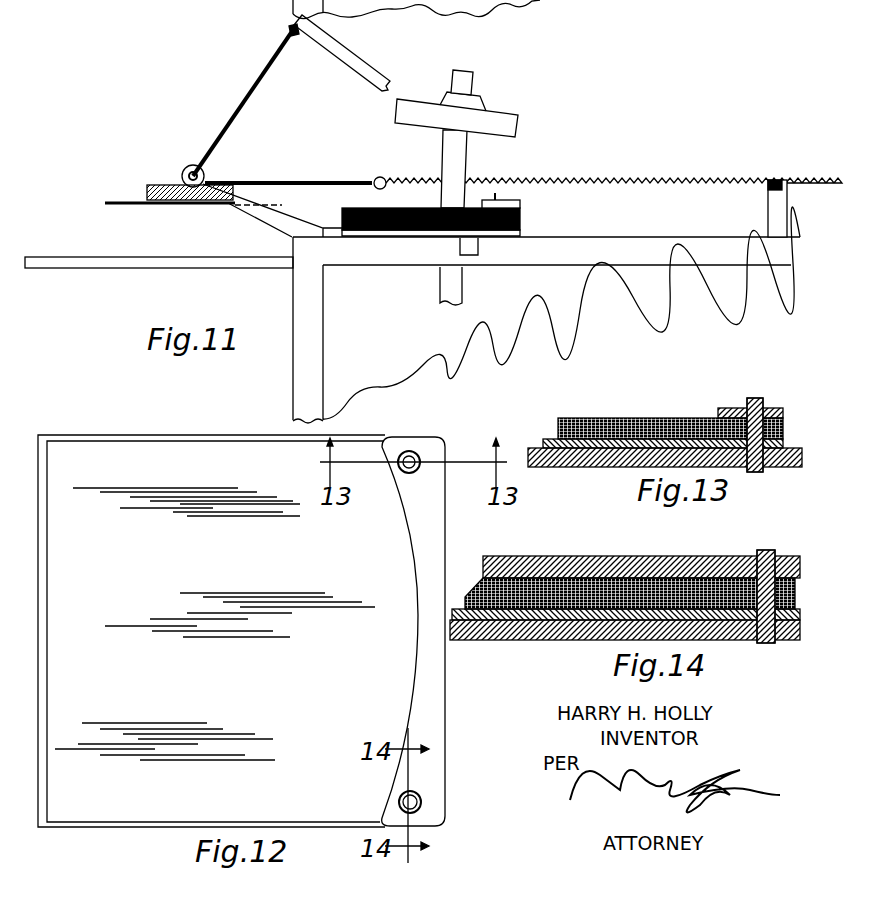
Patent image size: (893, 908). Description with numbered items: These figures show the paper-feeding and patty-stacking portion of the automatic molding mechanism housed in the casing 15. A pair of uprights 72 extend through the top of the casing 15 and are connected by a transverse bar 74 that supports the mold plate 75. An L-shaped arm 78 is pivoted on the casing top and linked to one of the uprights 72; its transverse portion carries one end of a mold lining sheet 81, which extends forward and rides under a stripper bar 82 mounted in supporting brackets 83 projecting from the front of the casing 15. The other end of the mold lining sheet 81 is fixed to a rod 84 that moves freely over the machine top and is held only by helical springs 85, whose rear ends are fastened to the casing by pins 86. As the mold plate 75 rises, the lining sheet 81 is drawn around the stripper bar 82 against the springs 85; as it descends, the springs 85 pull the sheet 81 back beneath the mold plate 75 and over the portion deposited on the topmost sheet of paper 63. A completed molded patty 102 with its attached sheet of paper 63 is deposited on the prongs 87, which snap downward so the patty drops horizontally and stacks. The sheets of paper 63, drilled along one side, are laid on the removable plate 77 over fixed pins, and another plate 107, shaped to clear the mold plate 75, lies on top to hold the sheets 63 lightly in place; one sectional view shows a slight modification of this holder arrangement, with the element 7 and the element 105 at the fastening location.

In FIG. 11, the casing 15 is at (294, 348).
In FIG. 13, the casing 15 is at (617, 468).
In FIG. 14, the casing 15 is at (500, 628).
In FIG. 11, the sheets of paper 63 is at (117, 200).
In FIG. 12, the sheets of paper 63 is at (143, 470).
In FIG. 13, the sheets of paper 63 is at (598, 418).
In FIG. 14, the sheets of paper 63 is at (532, 575).
In FIG. 11, the uprights 72 is at (457, 153).
In FIG. 11, the transverse bar 74 is at (458, 77).
In FIG. 11, the mold plate 75 is at (493, 118).
In FIG. 11, the removable holder 77 is at (393, 231).
In FIG. 12, the removable holder 77 is at (43, 436).
In FIG. 13, the removable holder 77 is at (775, 458).
In FIG. 11, the L-shaped arm 78 is at (357, 72).
In FIG. 11, the mold lining sheet 81 is at (253, 80).
In FIG. 11, the stripper bar 82 is at (207, 168).
In FIG. 11, the supporting brackets 83 is at (277, 220).
In FIG. 11, the rod 84 is at (380, 177).
In FIG. 11, the helical springs 85 is at (657, 180).
In FIG. 11, the pins 86 is at (778, 180).
In FIG. 11, the prongs 87 is at (75, 264).
In FIG. 11, the completed molded patty 102 is at (167, 183).
In FIG. 11, the rivet 105 is at (497, 196).
In FIG. 12, the rivet 105 is at (413, 459).
In FIG. 13, the rivet 105 is at (758, 399).
In FIG. 14, the rivet 105 is at (765, 550).
In FIG. 11, the plate 107 is at (522, 204).
In FIG. 12, the plate 107 is at (418, 525).
In FIG. 13, the plate 107 is at (727, 408).
In FIG. 14, the frame plate 7 is at (790, 641).